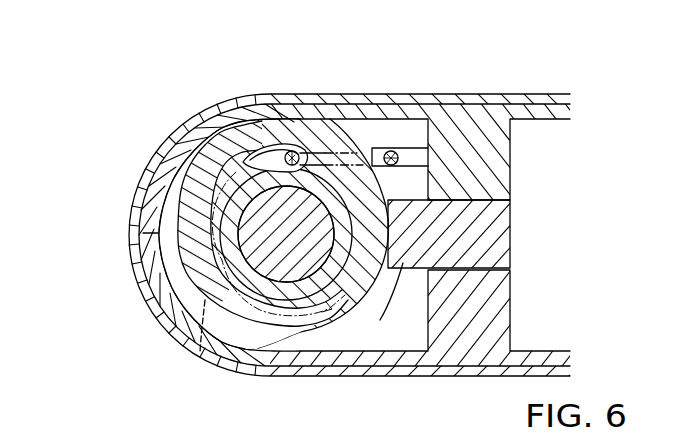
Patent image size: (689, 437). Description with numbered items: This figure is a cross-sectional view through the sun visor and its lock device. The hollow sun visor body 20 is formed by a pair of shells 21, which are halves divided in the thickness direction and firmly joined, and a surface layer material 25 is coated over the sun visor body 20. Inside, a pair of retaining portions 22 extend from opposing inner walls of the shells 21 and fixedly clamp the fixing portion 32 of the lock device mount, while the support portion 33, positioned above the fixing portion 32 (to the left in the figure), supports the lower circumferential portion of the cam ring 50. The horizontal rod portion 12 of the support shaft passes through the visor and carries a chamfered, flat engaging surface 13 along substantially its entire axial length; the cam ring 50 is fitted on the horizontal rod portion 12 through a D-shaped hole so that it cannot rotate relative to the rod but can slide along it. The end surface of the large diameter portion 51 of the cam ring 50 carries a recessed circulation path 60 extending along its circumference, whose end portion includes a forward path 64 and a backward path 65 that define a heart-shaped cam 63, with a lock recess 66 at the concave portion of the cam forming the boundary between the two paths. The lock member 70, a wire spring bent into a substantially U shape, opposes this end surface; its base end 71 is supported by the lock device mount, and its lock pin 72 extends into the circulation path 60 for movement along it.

The horizontal rod portion 12 is at (273, 275).
The engaging surface 13 is at (280, 235).
The sun visor body 20 is at (68, 180).
The shells 21 is at (157, 200).
The retaining portions 22 is at (502, 166).
The surface layer material 25 is at (206, 117).
The fixing portion 32 is at (500, 235).
The support portion 33 is at (380, 320).
The cam ring 50 is at (200, 293).
The large diameter portion 51 is at (202, 195).
The recessed circulation path 60 is at (200, 353).
The heart-shaped cam 63 is at (270, 155).
The forward path 64 is at (243, 118).
The backward path 65 is at (280, 190).
The lock recess 66 is at (312, 166).
The lock member 70 is at (350, 148).
The base end 71 is at (395, 152).
The lock pin 72 is at (318, 190).